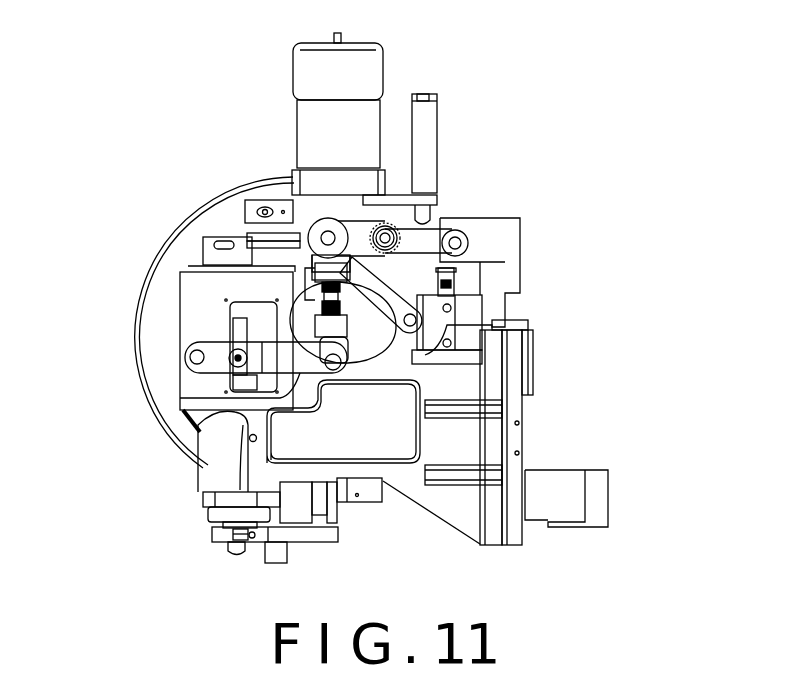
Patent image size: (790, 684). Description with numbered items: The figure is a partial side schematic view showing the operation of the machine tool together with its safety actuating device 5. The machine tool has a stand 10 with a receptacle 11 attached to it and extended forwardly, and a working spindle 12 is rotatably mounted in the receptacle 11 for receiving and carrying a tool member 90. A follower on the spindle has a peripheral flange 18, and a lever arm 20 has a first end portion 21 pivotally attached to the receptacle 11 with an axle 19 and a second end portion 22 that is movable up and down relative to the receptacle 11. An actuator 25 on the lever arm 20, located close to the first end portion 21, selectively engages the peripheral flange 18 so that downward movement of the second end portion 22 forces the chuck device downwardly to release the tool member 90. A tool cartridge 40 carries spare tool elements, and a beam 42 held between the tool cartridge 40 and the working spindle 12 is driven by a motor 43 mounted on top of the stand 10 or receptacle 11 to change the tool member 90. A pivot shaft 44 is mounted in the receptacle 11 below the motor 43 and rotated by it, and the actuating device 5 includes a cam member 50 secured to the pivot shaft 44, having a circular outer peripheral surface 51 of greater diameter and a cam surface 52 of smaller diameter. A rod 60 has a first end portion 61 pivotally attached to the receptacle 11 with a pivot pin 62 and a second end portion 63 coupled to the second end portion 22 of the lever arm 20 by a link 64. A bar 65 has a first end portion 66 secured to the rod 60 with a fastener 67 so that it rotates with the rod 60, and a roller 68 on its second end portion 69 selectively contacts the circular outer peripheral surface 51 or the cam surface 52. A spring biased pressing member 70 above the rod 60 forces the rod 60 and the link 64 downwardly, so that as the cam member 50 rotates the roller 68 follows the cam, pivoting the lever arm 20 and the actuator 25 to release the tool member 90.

The actuating device 5 is at (640, 173).
The stand 10 is at (513, 542).
The receptacle 11 is at (468, 522).
The working spindle 12 is at (205, 500).
The peripheral flange 18 is at (238, 350).
The axle 19 is at (195, 357).
The lever arm 20 is at (280, 405).
The first end portion 21 is at (290, 348).
The second end portion 22 is at (350, 362).
The actuator 25 is at (236, 360).
The tool cartridge 40 is at (238, 190).
The beam 42 is at (308, 545).
The motor 43 is at (352, 62).
The pivot shaft 44 is at (357, 376).
The cam member 50 is at (370, 378).
The circular outer peripheral surface 51 is at (455, 278).
The cam surface 52 is at (410, 372).
The rod 60 is at (440, 232).
The first end portion 61 is at (470, 240).
The pivot pin 62 is at (480, 262).
The second end portion 63 is at (323, 222).
The link 64 is at (250, 215).
The bar 65 is at (395, 300).
The first end portion 66 is at (346, 228).
The fastener 67 is at (389, 229).
The roller 68 is at (418, 333).
The second end portion 69 is at (470, 320).
The spring biased pressing member 70 is at (425, 115).
The tool member 90 is at (232, 550).